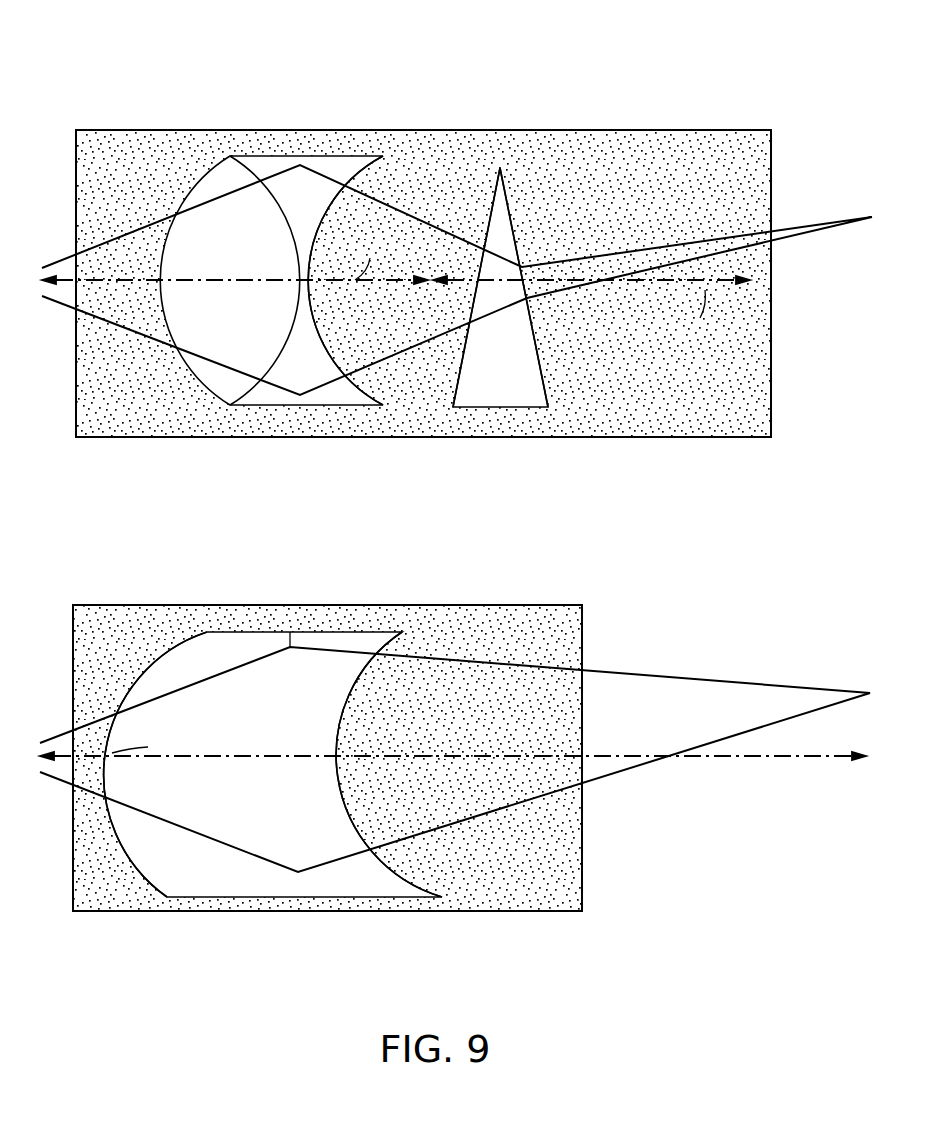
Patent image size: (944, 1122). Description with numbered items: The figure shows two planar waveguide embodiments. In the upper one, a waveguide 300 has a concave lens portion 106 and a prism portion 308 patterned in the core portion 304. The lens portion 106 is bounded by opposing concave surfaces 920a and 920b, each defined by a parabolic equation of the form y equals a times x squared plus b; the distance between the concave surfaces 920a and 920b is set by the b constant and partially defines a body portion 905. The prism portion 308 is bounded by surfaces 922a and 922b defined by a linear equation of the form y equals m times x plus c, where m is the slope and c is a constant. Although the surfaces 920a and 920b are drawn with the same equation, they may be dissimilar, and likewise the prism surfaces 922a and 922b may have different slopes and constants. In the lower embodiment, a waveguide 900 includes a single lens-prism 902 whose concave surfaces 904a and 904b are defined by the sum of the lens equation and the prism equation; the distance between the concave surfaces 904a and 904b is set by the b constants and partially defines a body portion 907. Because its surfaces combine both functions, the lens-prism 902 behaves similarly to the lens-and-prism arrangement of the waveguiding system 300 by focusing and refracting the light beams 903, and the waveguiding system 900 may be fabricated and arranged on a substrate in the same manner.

The waveguide 300 is at (457, 232).
The core portion 304 is at (610, 138).
The concave lens portion 106 is at (276, 167).
The concave surface 920a is at (237, 181).
The concave surface 920b is at (372, 184).
The body portion 905 is at (305, 327).
The prism portion 308 is at (502, 203).
The surface 922a is at (443, 368).
The surface 922b is at (558, 366).
The waveguide 900 is at (455, 707).
The lens-prism 902 is at (355, 640).
The concave surface 904a is at (241, 695).
The concave surface 904b is at (372, 684).
The body portion 907 is at (290, 657).
The light beams 903 is at (100, 718).